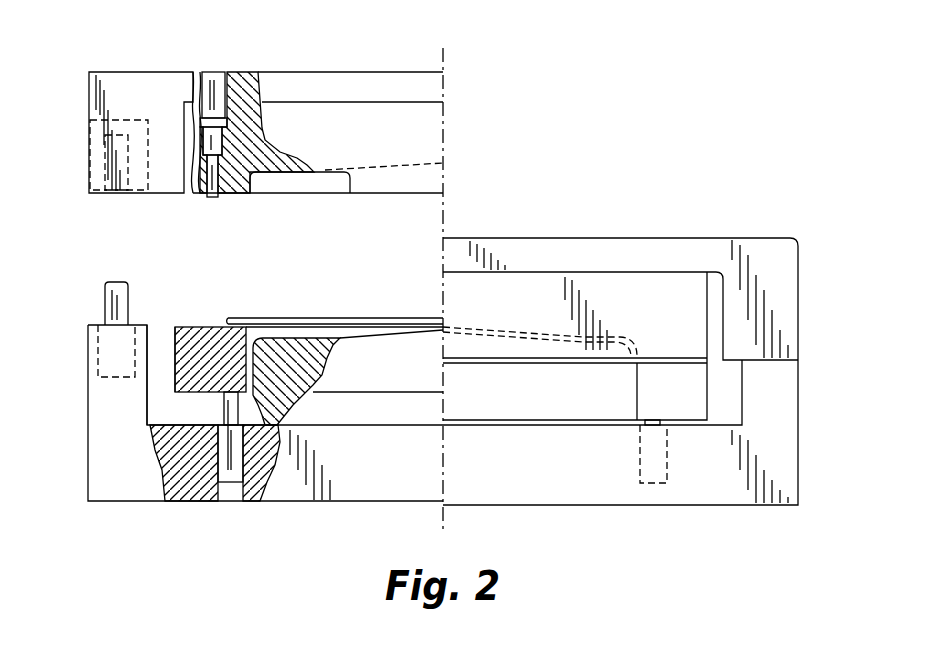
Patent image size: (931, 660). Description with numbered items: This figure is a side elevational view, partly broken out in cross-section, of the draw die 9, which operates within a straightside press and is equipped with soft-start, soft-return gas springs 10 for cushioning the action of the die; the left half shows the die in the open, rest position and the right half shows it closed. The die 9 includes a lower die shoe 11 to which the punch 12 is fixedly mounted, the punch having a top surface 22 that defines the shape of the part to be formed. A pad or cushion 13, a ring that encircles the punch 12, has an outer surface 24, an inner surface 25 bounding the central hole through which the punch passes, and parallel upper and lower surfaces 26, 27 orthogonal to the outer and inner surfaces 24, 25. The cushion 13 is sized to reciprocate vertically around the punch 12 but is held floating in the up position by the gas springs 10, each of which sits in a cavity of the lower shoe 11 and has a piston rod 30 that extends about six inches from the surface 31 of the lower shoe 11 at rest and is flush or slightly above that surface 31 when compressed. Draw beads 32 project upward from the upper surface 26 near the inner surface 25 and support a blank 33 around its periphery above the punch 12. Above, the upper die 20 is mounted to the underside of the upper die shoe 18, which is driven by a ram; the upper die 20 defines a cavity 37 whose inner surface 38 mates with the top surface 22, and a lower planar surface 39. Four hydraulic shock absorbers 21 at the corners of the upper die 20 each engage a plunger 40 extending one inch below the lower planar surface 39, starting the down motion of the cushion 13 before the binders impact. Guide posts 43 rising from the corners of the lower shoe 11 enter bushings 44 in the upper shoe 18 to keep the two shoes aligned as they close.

The draw die 9 is at (550, 187).
The gas spring 10 is at (640, 460).
The lower die shoe 11 is at (88, 406).
The punch 12 is at (367, 413).
The cushion 13 is at (147, 394).
The upper die shoe 18 is at (89, 148).
The upper die 20 is at (332, 118).
The hydraulic shock absorber 21 is at (222, 92).
The top surface 22 is at (313, 340).
The outer surface 24 is at (175, 338).
The inner surface 25 is at (250, 338).
The upper surface 26 is at (185, 327).
The lower surface 27 is at (190, 401).
The piston rod 30 is at (250, 500).
The surface 31 is at (407, 418).
The draw bead 32 is at (230, 318).
The blank 33 is at (368, 318).
The cavity 37 is at (320, 184).
The inner surface 38 is at (278, 175).
The lower planar surface 39 is at (225, 195).
The plunger 40 is at (203, 190).
The guide post 43 is at (106, 300).
The bushing 44 is at (132, 120).